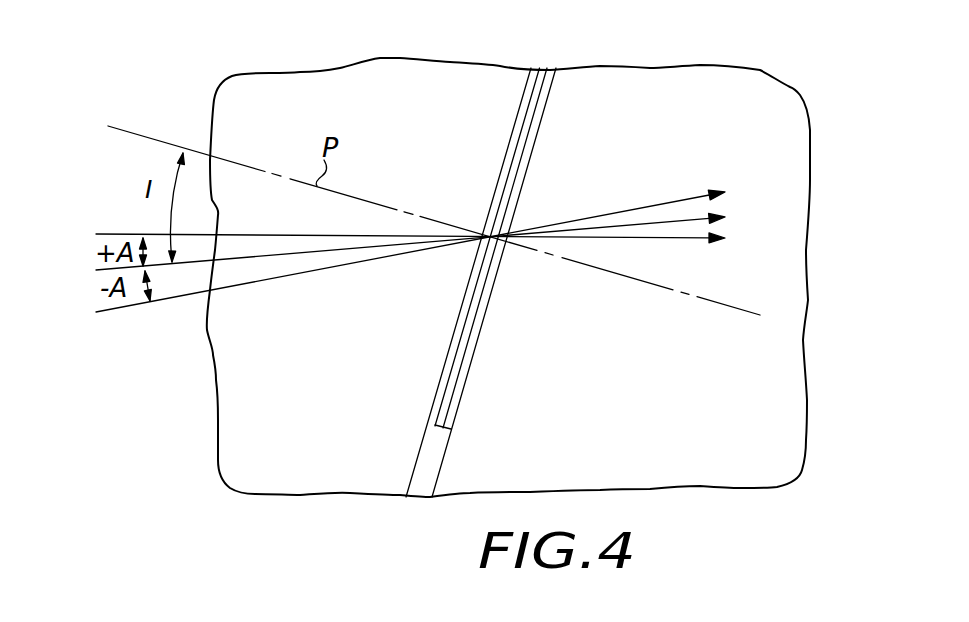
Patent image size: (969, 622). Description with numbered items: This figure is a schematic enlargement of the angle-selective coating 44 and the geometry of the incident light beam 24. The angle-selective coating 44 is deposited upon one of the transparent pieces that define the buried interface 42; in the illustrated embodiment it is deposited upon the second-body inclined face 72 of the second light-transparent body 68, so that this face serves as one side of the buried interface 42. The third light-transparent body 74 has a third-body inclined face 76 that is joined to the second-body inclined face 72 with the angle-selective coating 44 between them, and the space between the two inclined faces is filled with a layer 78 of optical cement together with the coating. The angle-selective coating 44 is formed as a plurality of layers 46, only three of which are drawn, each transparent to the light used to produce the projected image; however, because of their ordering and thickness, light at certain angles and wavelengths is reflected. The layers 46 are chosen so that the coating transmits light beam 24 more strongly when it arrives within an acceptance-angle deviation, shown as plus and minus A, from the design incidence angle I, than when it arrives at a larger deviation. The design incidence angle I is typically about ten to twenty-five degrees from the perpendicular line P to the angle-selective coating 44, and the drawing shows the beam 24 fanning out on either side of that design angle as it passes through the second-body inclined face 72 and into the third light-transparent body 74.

The light beam 24 is at (287, 254).
The buried interface 42 is at (455, 257).
The angle-selective coating 44 is at (562, 63).
The layers 46 is at (448, 362).
The second light-transparent body 68 is at (228, 396).
The second-body inclined face 72 is at (413, 466).
The third light-transparent body 74 is at (778, 381).
The third-body inclined face 76 is at (452, 437).
The layer of optical cement 78 is at (428, 467).